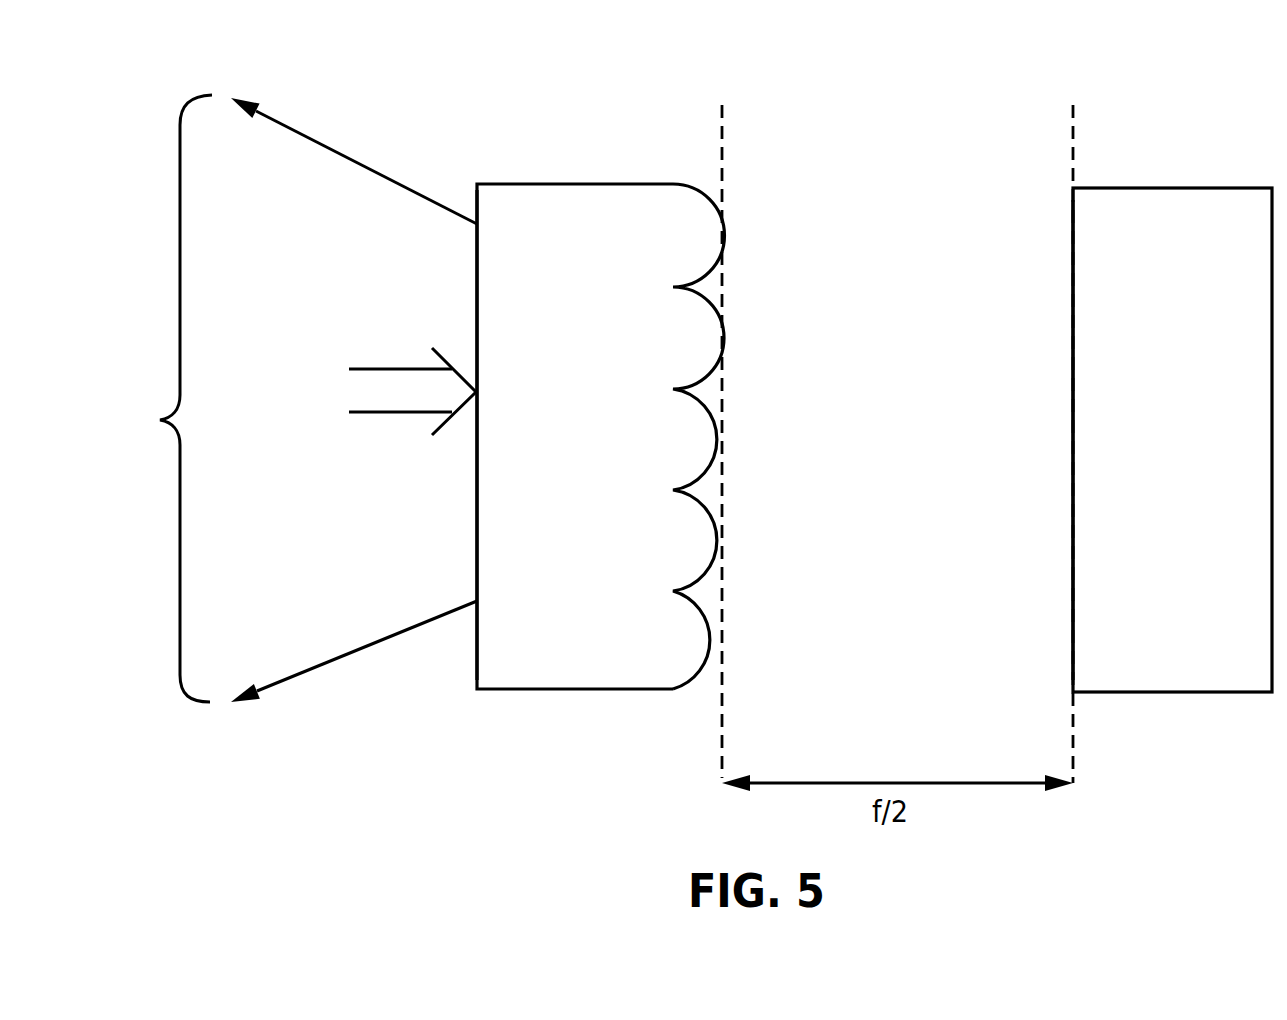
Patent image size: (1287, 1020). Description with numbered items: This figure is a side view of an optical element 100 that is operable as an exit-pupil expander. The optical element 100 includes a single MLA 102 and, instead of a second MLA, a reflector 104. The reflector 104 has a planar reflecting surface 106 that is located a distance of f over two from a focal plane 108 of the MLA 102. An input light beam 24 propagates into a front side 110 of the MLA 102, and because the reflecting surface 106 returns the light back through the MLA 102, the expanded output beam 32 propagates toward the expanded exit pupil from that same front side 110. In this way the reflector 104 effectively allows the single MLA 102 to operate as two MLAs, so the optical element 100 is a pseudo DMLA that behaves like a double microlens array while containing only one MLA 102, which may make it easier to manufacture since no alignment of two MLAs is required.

The optical element 100 is at (546, 468).
The MLA 102 is at (582, 185).
The reflector 104 is at (1165, 188).
The planar reflecting surface 106 is at (1048, 616).
The focal plane 108 is at (722, 105).
The front side 110 is at (438, 643).
The input light beam 24 is at (393, 391).
The expanded output beam 32 is at (297, 398).